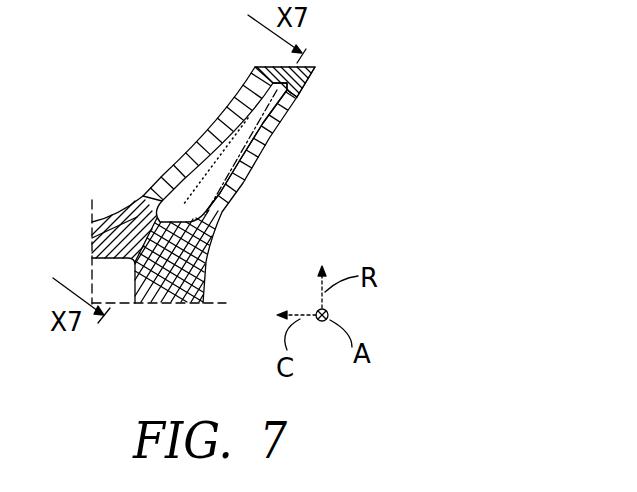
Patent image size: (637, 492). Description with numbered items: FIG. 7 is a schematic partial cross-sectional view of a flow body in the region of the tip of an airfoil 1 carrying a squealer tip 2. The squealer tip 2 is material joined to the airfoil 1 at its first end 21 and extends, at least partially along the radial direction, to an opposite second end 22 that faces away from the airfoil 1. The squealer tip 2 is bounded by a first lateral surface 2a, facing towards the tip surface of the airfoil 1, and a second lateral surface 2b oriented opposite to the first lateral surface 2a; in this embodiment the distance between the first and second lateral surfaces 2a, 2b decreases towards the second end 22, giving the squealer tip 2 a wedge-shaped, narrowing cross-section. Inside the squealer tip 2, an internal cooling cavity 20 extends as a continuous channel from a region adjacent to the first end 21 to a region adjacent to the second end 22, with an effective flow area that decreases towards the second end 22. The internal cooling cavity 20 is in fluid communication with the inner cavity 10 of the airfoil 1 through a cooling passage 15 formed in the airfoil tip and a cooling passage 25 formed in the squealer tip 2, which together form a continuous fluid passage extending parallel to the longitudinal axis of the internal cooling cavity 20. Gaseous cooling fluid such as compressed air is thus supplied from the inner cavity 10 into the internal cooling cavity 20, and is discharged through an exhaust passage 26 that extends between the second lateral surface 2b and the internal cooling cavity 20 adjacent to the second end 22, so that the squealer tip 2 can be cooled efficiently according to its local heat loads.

The airfoil 1 is at (163, 290).
The squealer tip 2 is at (223, 114).
The first lateral surface 2a is at (185, 148).
The second lateral surface 2b is at (250, 182).
The inner cavity 10 is at (130, 272).
The cooling passage 15 is at (186, 282).
The internal cooling cavity 20 is at (190, 149).
The first end 21 is at (120, 228).
The second end 22 is at (257, 60).
The cooling passage 25 is at (214, 240).
The exhaust passage 26 is at (298, 94).